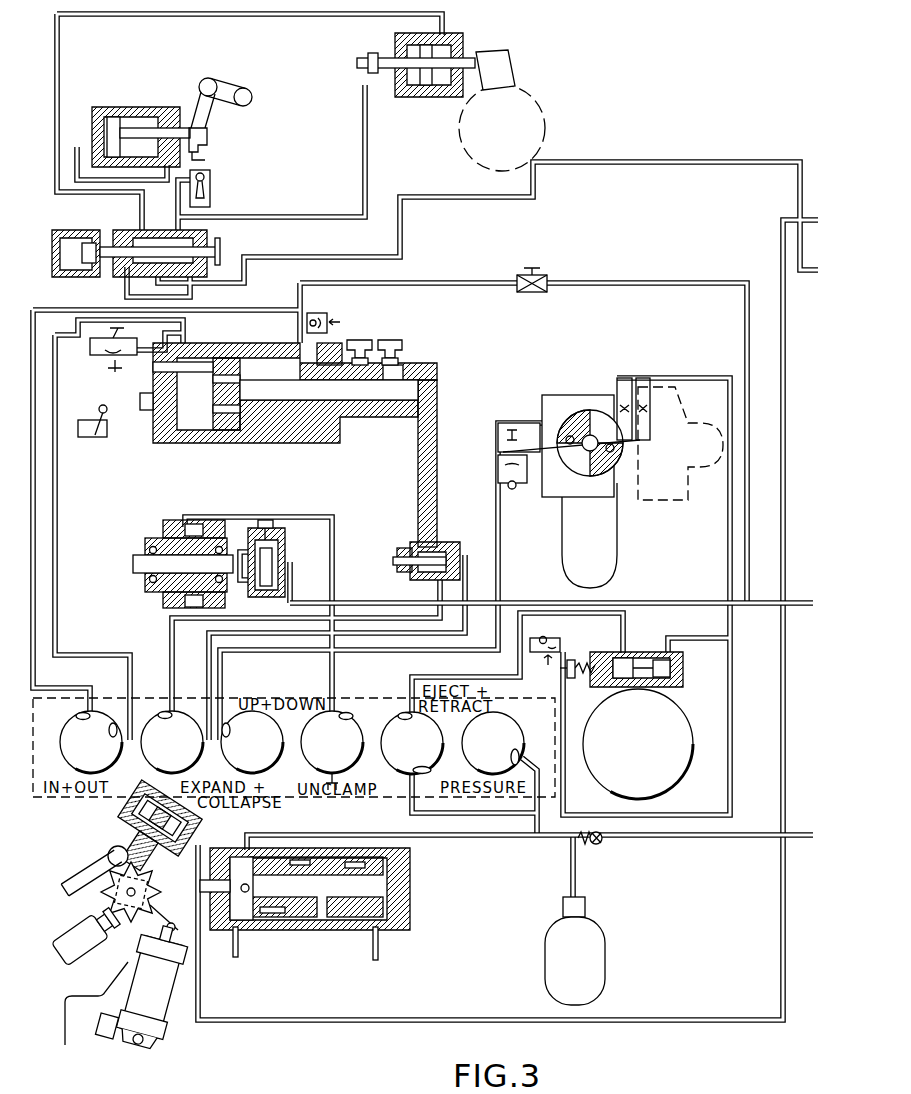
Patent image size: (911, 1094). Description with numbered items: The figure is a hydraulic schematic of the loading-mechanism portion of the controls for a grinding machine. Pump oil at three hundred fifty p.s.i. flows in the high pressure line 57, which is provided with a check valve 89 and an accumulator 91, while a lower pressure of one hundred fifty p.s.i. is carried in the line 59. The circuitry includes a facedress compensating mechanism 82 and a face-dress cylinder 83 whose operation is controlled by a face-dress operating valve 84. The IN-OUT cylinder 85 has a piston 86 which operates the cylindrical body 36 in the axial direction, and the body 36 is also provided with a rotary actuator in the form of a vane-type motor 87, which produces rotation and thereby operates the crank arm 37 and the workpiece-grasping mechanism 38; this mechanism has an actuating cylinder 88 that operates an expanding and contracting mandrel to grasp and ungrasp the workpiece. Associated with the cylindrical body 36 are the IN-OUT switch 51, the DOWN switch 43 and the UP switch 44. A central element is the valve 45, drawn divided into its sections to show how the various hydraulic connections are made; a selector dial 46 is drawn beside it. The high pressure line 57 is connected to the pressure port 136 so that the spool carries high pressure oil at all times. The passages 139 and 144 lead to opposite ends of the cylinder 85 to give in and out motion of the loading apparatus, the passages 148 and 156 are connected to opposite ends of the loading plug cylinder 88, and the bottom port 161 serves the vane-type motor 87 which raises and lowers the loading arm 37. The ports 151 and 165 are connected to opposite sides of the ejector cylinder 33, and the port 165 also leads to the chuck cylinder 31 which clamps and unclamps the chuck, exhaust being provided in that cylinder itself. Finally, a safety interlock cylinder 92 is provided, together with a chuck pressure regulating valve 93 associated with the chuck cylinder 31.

The chuck cylinder 31 is at (143, 566).
The ejector cylinder 33 is at (657, 652).
The cylindrical body 36 is at (423, 372).
The crank arm 37 is at (425, 457).
The workpiece-grasping mechanism 38 is at (410, 547).
The DOWN switch 43 is at (395, 340).
The UP switch 44 is at (357, 340).
The valve 45 is at (298, 933).
The selector dial 46 is at (660, 787).
The IN-OUT switch 51 is at (88, 432).
The high pressure line 57 is at (802, 840).
The line 59 is at (792, 600).
The facedress compensating mechanism 82 is at (463, 43).
The face-dress cylinder 83 is at (140, 107).
The face-dress operating valve 84 is at (207, 253).
The IN-OUT cylinder 85 is at (257, 433).
The piston 86 is at (218, 433).
The vane-type motor 87 is at (577, 413).
The actuating cylinder 88 is at (447, 550).
The check valve 89 is at (606, 841).
The accumulator 91 is at (598, 956).
The safety interlock cylinder 92 is at (117, 822).
The chuck pressure regulating valve 93 is at (280, 525).
The pressure port 136 is at (527, 746).
The passage 139 is at (78, 718).
The passage 144 is at (113, 723).
The passage 148 is at (163, 715).
The port 151 is at (436, 770).
The passage 156 is at (172, 742).
The bottom port 161 is at (232, 712).
The port 165 is at (400, 715).